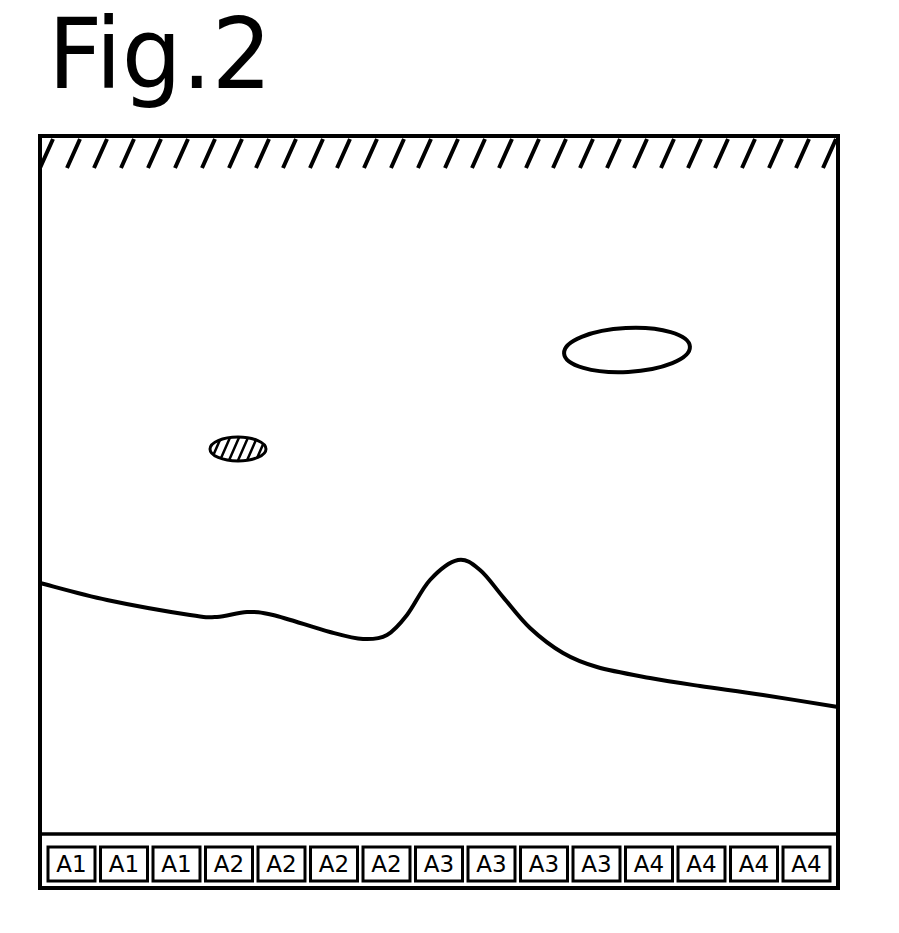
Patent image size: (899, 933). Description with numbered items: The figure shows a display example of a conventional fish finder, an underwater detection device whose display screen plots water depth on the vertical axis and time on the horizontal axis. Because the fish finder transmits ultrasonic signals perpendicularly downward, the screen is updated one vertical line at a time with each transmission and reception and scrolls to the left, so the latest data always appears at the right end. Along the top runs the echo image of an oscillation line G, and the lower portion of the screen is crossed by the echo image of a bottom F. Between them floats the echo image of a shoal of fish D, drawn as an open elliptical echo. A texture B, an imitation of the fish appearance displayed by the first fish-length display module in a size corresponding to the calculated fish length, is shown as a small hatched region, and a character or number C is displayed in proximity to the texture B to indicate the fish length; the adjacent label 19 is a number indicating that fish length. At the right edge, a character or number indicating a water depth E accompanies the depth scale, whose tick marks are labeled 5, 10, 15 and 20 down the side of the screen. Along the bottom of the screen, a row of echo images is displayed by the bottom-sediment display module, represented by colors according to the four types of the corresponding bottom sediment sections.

The depth scale 5 cm 5 is at (838, 277).
The depth scale 10 cm 10 is at (838, 417).
The depth scale 15 cm 15 is at (838, 557).
The depth scale 20 cm 20 is at (838, 694).
The region of interest (hatched region) 19 is at (195, 431).
The texture B is at (190, 431).
The character or number indicating the fish length C is at (360, 451).
The echo image of a shoal of fish D is at (579, 330).
The character or number indicating a water depth E is at (712, 459).
The echo image of a bottom F is at (439, 638).
The echo image of an oscillation line G is at (438, 204).